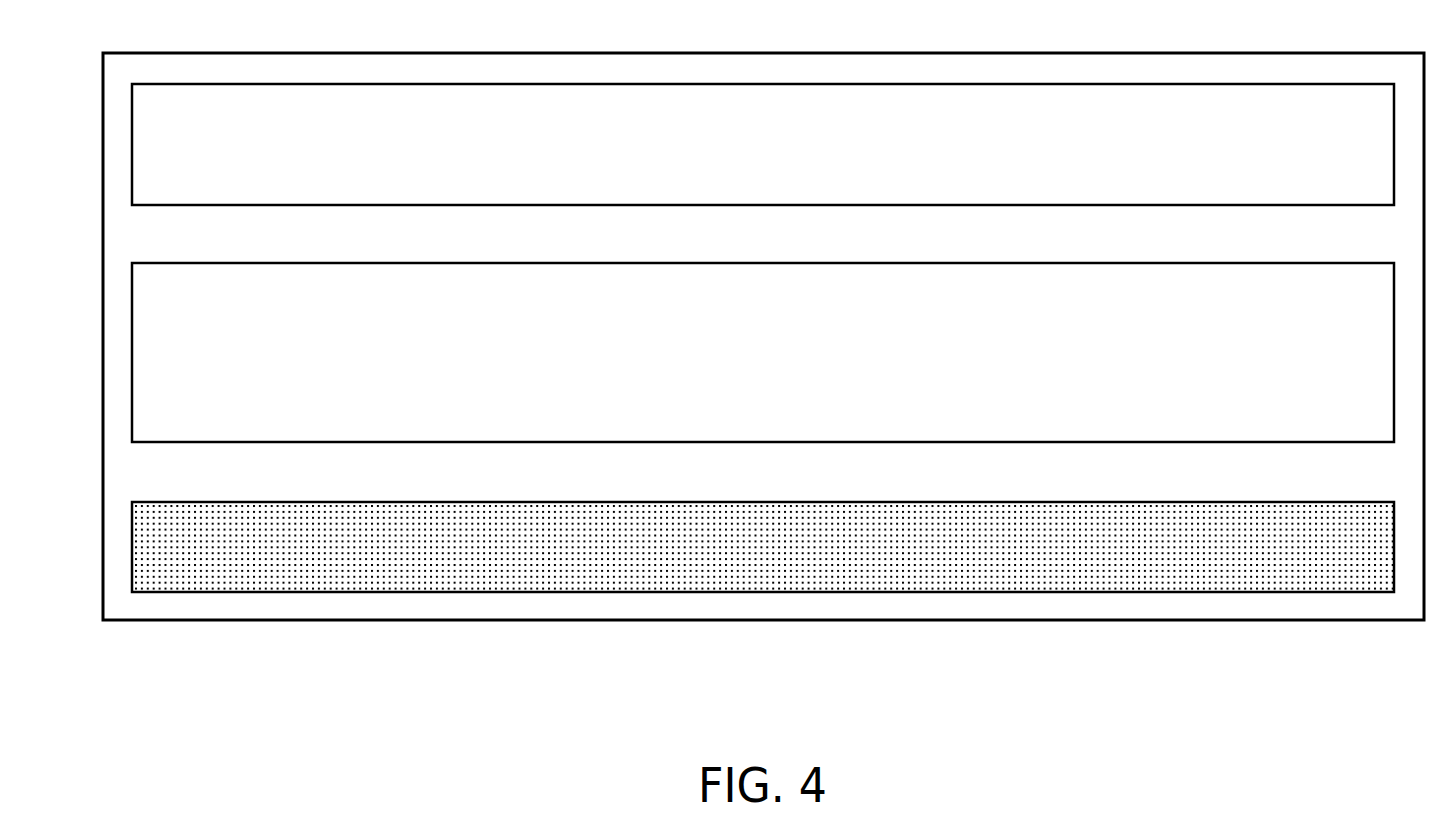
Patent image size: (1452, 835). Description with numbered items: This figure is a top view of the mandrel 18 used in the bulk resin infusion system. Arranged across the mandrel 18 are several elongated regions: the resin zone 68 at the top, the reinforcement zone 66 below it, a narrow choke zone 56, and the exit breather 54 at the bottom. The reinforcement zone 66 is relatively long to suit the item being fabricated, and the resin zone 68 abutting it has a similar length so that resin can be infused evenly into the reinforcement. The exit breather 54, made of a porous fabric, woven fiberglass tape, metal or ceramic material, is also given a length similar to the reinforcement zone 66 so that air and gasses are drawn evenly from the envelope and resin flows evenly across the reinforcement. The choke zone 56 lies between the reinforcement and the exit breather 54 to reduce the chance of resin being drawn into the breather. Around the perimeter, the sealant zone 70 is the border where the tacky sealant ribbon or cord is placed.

The mandrel 18 is at (1052, 53).
The resin zone 68 is at (749, 155).
The reinforcement zone 66 is at (749, 365).
The choke zone 56 is at (749, 482).
The exit breather 54 is at (366, 592).
The sealant zone 70 is at (307, 74).